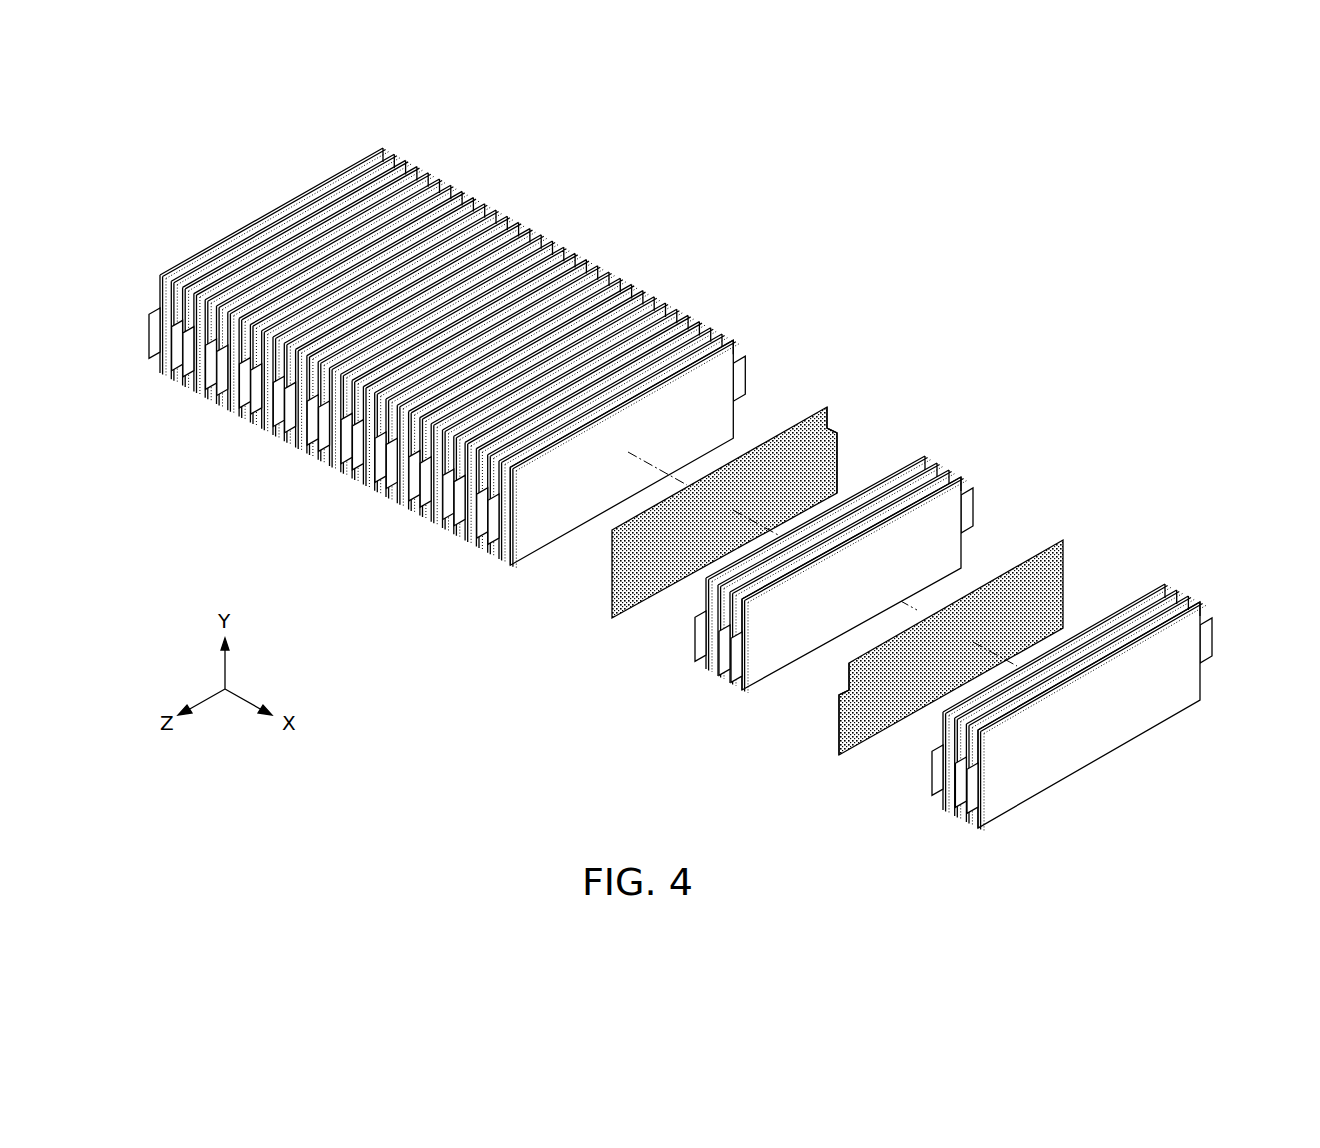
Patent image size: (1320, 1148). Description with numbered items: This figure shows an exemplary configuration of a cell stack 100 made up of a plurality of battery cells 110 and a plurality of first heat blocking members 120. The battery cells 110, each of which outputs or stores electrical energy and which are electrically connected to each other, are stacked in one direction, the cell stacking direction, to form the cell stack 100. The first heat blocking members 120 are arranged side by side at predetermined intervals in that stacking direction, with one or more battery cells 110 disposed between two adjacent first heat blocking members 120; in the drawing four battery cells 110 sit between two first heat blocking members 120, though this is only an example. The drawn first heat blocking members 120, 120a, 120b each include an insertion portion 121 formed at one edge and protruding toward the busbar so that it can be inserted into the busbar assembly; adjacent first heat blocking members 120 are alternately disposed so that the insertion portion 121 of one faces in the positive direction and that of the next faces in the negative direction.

The cell stack 100 is at (704, 466).
The battery cell 110 is at (695, 393).
The first heat blocking member 120 is at (983, 203).
The first electrode plate 120a is at (880, 723).
The second electrode plate 120b is at (650, 587).
The insertion portion 121 is at (833, 447).